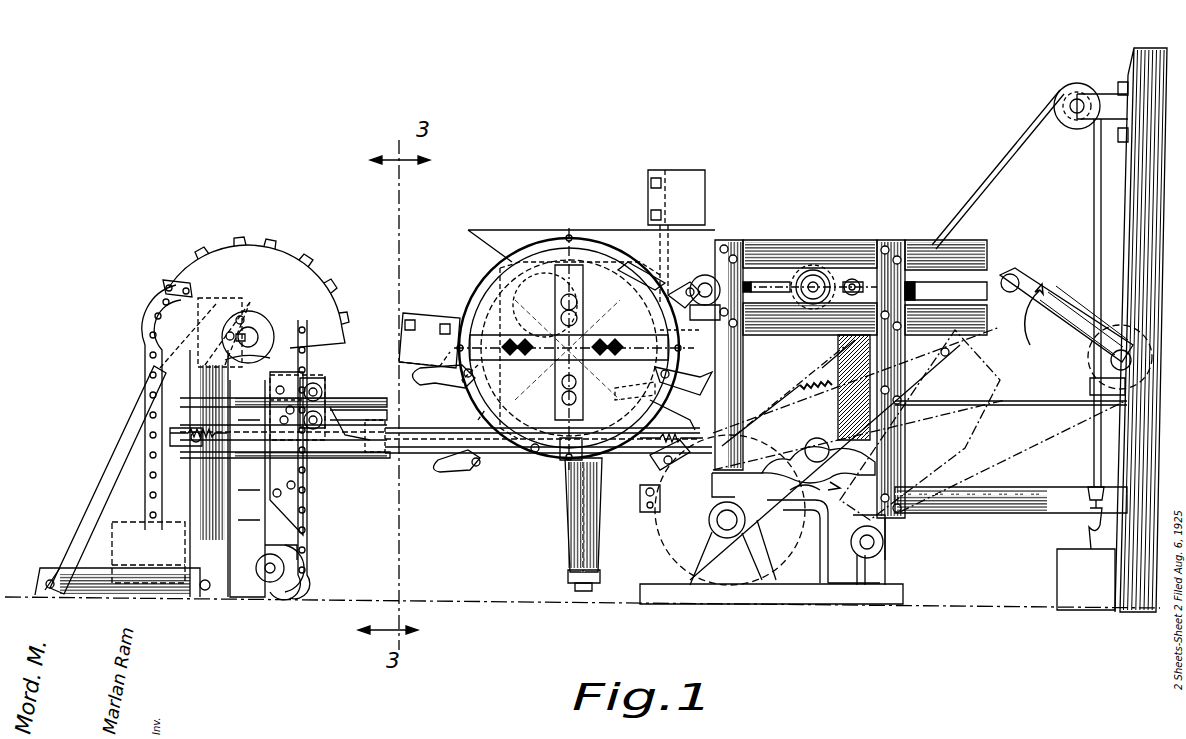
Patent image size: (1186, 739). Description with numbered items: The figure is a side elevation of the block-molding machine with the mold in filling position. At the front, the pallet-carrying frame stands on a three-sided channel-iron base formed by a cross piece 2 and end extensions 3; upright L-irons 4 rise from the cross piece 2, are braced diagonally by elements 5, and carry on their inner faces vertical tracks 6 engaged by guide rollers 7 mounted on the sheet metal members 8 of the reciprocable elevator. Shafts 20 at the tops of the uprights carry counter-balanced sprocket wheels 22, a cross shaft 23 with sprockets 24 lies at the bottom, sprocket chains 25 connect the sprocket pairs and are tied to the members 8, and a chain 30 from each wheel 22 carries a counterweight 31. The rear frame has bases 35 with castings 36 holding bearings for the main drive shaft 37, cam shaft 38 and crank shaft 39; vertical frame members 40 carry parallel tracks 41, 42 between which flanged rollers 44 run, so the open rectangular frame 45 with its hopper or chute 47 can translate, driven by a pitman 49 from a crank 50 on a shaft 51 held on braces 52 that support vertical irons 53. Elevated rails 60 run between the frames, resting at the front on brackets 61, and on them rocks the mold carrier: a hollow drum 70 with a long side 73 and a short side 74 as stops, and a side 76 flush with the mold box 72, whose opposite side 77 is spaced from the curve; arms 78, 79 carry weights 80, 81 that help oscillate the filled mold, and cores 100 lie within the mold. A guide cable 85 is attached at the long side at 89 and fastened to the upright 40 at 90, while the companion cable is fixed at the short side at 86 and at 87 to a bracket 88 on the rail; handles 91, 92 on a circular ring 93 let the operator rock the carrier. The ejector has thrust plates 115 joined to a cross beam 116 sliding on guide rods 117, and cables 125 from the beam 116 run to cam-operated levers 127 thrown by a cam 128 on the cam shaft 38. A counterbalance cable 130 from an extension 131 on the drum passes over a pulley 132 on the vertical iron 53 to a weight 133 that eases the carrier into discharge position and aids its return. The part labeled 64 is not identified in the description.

The cross piece 2 is at (360, 402).
The end extensions 3 is at (160, 596).
The L-irons 4 is at (235, 520).
The diagonal brace elements 5 is at (108, 484).
The tracks or guides 6 is at (290, 508).
The guide rollers 7 is at (326, 410).
The sheet metal members 8 is at (338, 458).
The shafts 20 is at (250, 338).
The counter-balanced sprocket wheel 22 is at (283, 265).
The cross shaft 23 is at (275, 568).
The sprockets 24 is at (300, 547).
The sprocket chains 25 is at (305, 530).
The chain 30 is at (146, 389).
The counterweight 31 is at (148, 552).
The bases 35 is at (790, 604).
The castings 36 is at (868, 570).
The main drive shaft 37 is at (745, 520).
The cam shaft 38 is at (820, 435).
The crank shaft 39 is at (884, 542).
The vertical frame members 40 is at (744, 352).
The track 41 is at (805, 242).
The track 42 is at (785, 368).
The flanged wheels or rollers 44 is at (705, 305).
The open rectangular frame 45 is at (765, 282).
The hopper or chute 47 is at (530, 232).
The pitman 49 is at (935, 283).
The crank 50 is at (1030, 290).
The shaft 51 is at (1108, 368).
The duplicate irons 52 is at (1020, 396).
The vertical irons 53 is at (1132, 229).
The L-irons 60 is at (424, 447).
The brackets 61 is at (190, 470).
The rod 64 is at (410, 430).
The hollow drum 70 is at (490, 310).
The mold box 72 is at (478, 380).
The long side 73 is at (548, 252).
The short side 74 is at (566, 458).
The rocker side 76 is at (682, 338).
The mold box side 77 is at (480, 416).
The arm 78 is at (660, 228).
The arm 79 is at (452, 337).
The weight 80 is at (693, 175).
The weight 81 is at (426, 316).
The guide cable 85 is at (668, 425).
The cable attachment point 86 is at (635, 390).
The cable attachment point 87 is at (192, 445).
The bracket 88 is at (172, 433).
The cable attachment point 89 is at (640, 268).
The cable fastening point 90 is at (690, 430).
The handles 91 is at (645, 462).
The handles 92 is at (447, 421).
The circular ring 93 is at (540, 450).
The cores 100 is at (612, 292).
The thrust plates 115 is at (568, 500).
The cross beam 116 is at (568, 575).
The guide rods 117 is at (580, 592).
The cables 125 is at (782, 388).
The cam-operated levers 127 is at (918, 448).
The cam 128 is at (802, 520).
The cable 130 is at (975, 202).
The extension 131 is at (646, 512).
The pulley 132 is at (1080, 86).
The weight 133 is at (1062, 565).